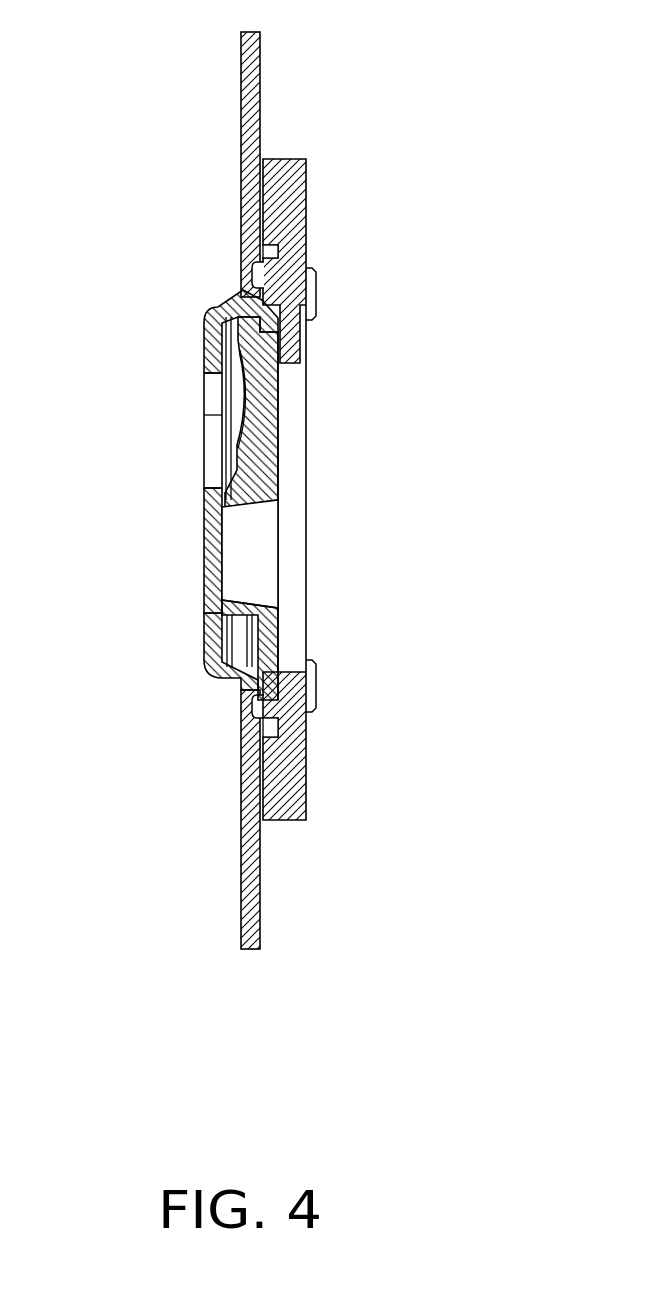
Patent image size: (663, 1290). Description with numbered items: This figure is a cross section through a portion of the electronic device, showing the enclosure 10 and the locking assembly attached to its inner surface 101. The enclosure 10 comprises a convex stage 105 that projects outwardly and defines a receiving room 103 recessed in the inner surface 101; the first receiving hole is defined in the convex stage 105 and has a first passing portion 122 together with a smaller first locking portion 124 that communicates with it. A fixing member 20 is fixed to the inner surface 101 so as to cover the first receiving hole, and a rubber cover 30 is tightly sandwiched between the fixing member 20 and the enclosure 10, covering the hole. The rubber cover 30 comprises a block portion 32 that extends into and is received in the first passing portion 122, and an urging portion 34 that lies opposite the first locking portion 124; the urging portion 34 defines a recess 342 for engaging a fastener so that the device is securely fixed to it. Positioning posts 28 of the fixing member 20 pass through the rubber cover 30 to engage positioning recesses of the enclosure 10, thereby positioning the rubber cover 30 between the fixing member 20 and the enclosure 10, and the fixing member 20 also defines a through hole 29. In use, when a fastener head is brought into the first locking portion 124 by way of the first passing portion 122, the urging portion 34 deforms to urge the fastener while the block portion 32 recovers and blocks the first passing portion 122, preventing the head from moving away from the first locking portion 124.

The enclosure 10 is at (255, 118).
The inner surface 101 is at (260, 76).
The fixing member 20 is at (284, 195).
The positioning posts 28 is at (262, 272).
The convex stage 105 is at (255, 305).
The receiving room 103 is at (235, 340).
The first locking portion 124 is at (215, 388).
The recess 342 is at (240, 402).
The urging portion 34 is at (262, 443).
The through hole 29 is at (292, 471).
The block portion 32 is at (213, 553).
The rubber cover 30 is at (278, 652).
The first passing portion 122 is at (210, 615).